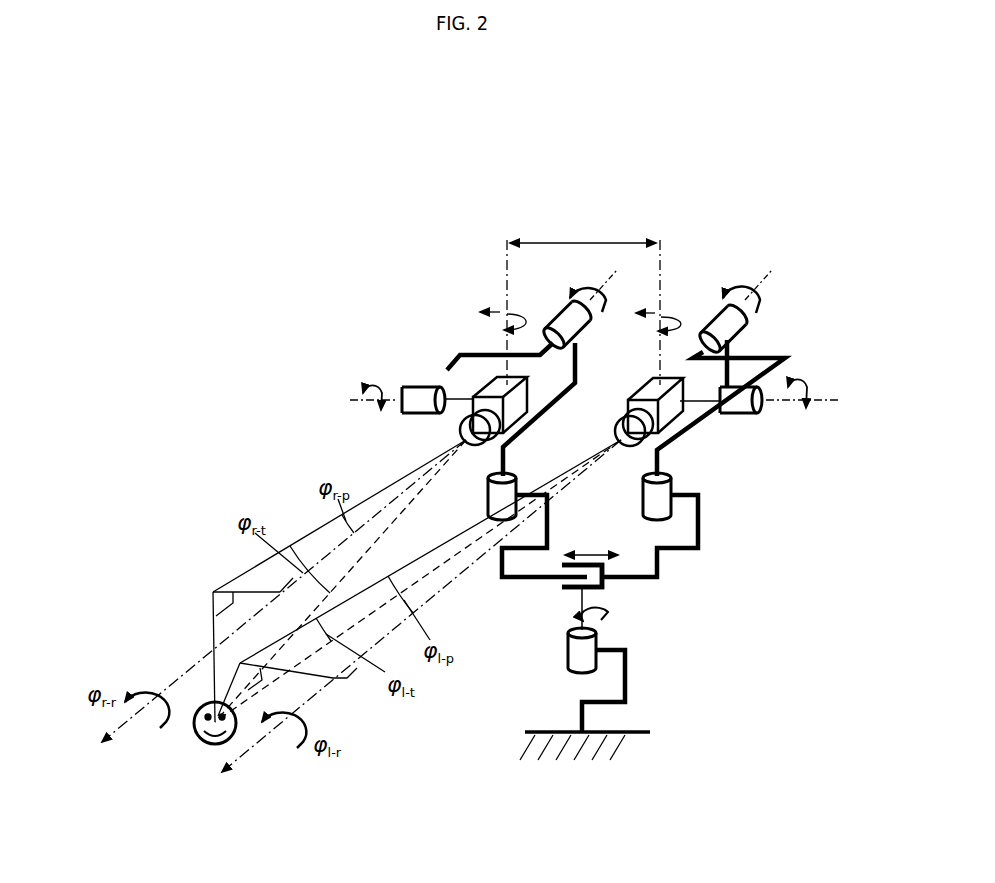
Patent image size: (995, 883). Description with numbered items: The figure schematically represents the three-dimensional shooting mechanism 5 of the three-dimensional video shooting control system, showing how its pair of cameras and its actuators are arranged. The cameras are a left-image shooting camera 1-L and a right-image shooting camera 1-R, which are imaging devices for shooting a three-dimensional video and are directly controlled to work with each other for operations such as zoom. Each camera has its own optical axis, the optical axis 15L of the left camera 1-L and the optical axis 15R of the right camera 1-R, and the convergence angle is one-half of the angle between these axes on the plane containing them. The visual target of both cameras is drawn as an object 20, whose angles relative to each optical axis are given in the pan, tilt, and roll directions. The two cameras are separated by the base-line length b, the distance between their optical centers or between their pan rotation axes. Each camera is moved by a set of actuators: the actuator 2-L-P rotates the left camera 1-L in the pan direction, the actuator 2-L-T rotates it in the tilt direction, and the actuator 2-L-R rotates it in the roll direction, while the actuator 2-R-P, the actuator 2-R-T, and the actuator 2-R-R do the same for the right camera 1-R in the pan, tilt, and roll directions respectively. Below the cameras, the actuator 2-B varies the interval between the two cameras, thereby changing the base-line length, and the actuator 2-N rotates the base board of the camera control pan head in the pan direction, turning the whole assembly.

The 3D shooting mechanism 5 is at (412, 142).
The object 20 is at (203, 708).
The optical axis of right camera 15R is at (128, 720).
The optical axis of left camera 15L is at (247, 752).
The right-image shooting camera 1-R is at (462, 430).
The left-image shooting camera 1-L is at (620, 426).
The actuator for rotating the right camera in the roll direction 2-R-R is at (555, 322).
The actuator for rotating the right camera in the tilt direction 2-R-T is at (414, 385).
The actuator for rotating the right camera in the pan direction 2-R-P is at (488, 500).
The actuator for rotating the left camera in the roll direction 2-L-R is at (740, 330).
The actuator for rotating the left camera in the tilt direction 2-L-T is at (742, 414).
The actuator for rotating the left camera in the pan direction 2-L-P is at (672, 488).
The actuator that varies the interval between two cameras 2-B is at (575, 603).
The actuator that rotates the base board of the camera control pan head 2-N is at (568, 655).